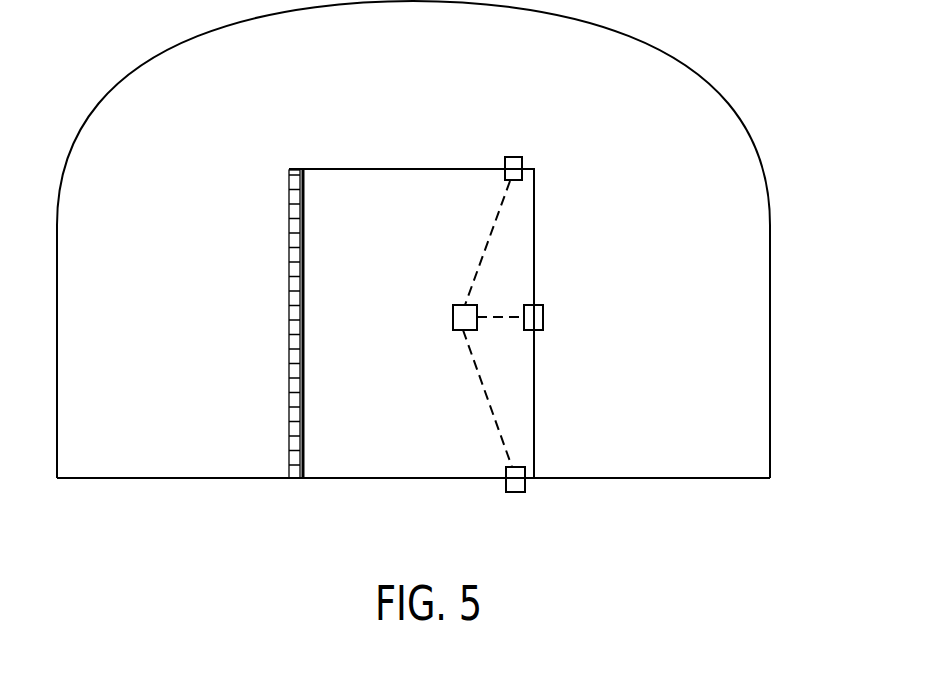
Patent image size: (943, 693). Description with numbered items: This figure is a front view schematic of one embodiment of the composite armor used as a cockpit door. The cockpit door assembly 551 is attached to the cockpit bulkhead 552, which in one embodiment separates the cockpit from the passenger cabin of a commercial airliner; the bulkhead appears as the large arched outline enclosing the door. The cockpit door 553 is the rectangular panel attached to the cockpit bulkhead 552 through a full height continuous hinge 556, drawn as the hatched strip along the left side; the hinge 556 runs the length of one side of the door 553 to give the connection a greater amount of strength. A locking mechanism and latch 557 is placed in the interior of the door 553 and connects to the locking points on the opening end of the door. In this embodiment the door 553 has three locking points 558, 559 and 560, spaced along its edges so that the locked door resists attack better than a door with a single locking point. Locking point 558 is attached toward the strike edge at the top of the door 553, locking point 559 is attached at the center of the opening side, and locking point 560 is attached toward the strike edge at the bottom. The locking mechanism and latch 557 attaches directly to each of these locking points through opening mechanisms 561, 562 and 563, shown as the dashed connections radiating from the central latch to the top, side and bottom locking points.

The cockpit door assembly 551 is at (762, 39).
The cockpit bulkhead 552 is at (705, 125).
The cockpit door 553 is at (375, 205).
The full height continuous hinge 556 is at (289, 417).
The locking mechanism and latch 557 is at (453, 309).
The locking point 558 is at (512, 157).
The locking point 559 is at (543, 322).
The locking point 560 is at (510, 493).
The opening mechanism 561 is at (483, 243).
The opening mechanism 562 is at (483, 330).
The opening mechanism 563 is at (482, 398).